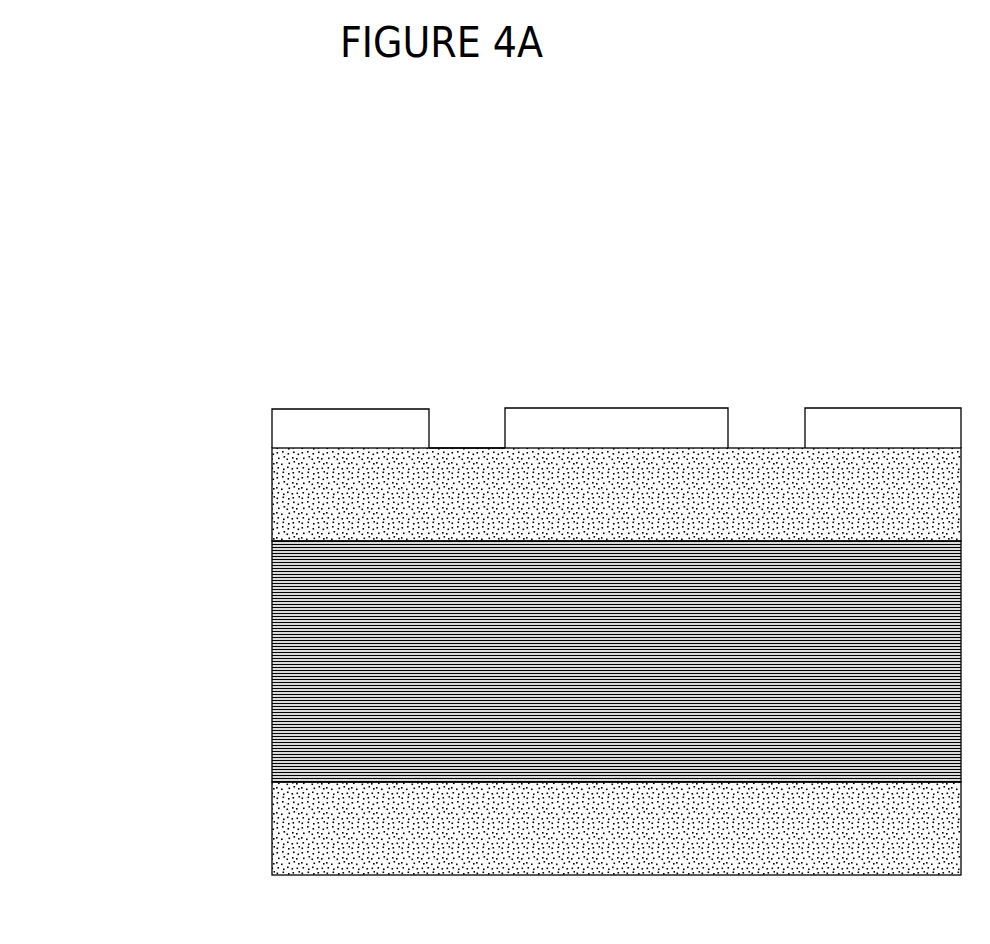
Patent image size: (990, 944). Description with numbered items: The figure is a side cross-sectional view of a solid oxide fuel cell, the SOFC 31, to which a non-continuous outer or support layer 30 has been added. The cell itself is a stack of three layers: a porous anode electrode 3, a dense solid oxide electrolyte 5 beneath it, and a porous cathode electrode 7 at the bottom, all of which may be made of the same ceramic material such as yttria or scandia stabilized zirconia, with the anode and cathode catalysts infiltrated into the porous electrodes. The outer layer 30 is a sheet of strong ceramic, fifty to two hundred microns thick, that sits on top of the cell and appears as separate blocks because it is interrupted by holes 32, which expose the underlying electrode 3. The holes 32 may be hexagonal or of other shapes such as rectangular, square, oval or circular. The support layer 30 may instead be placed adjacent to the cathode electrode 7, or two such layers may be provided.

The porous anode electrode 3 is at (270, 489).
The dense solid oxide electrolyte 5 is at (273, 673).
The porous cathode electrode 7 is at (273, 820).
The non-continuous outer layer 30 is at (508, 376).
The SOFC 31 is at (652, 327).
The hexagonal holes 32 is at (453, 408).